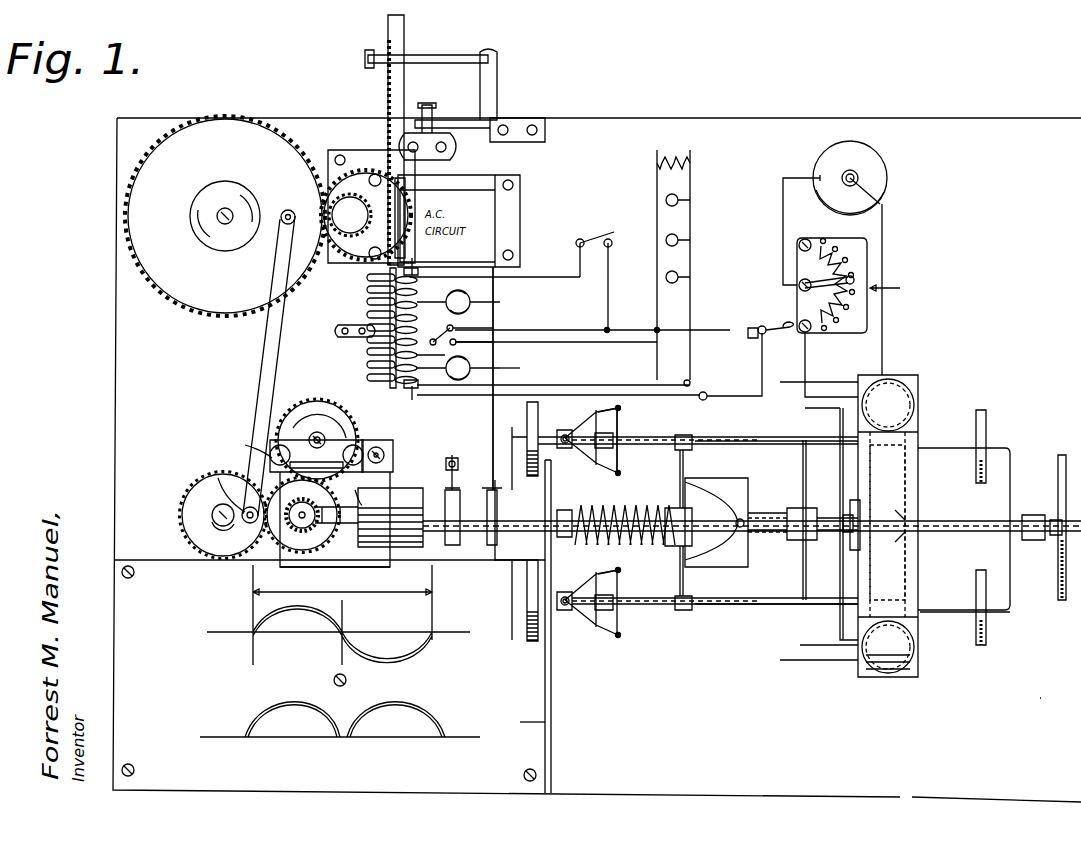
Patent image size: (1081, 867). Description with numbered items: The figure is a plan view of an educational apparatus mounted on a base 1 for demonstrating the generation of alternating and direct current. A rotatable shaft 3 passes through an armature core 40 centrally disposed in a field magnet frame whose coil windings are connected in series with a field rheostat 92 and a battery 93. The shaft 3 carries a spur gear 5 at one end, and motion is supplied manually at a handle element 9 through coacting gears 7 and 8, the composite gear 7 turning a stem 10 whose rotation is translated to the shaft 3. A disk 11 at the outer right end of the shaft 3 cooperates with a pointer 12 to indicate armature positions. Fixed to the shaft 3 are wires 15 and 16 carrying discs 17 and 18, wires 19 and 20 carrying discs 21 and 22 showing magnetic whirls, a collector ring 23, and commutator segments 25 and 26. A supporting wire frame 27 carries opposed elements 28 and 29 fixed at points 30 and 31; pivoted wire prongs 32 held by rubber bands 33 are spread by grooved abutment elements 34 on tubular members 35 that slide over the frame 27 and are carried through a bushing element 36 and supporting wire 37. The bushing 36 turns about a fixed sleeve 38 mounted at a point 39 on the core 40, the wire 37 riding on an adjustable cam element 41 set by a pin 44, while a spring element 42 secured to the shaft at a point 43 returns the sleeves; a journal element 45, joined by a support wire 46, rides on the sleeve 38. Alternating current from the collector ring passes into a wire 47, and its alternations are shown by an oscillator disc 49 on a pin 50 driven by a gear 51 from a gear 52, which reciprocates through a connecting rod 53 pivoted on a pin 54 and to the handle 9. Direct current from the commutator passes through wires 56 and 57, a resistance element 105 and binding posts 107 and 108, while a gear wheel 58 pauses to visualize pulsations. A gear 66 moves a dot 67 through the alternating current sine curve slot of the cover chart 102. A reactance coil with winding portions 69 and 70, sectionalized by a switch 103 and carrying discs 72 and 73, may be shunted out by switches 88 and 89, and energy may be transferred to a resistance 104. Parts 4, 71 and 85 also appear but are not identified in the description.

The base 1 is at (1040, 698).
The rotatable shaft 3 is at (940, 526).
The armature core 4 is at (905, 490).
The spur gear 5 is at (900, 668).
The composite gear 7 is at (312, 515).
The gear 8 is at (200, 530).
The handle element 9 is at (218, 478).
The stem 10 is at (867, 485).
The disk 11 is at (1062, 458).
The pointer 12 is at (1055, 540).
The wire 15 is at (1012, 490).
The wire 16 is at (1012, 590).
The disc 17 is at (988, 426).
The disc 18 is at (988, 633).
The wire 19 is at (527, 440).
The wire 20 is at (510, 556).
The disc 21 is at (538, 428).
The disc 22 is at (540, 575).
The collector ring 23 is at (465, 475).
The commutator segment 25 is at (400, 485).
The commutator segment 26 is at (450, 546).
The supporting wire frame 27 is at (775, 435).
The opposed element 28 is at (570, 432).
The opposed element 29 is at (567, 596).
The fixing point 30 is at (557, 430).
The fixing point 31 is at (567, 606).
The wire prong 32 is at (598, 597).
The rubber band 33 is at (620, 590).
The pressure abutment element 34 is at (617, 501).
The tubular member 35 is at (664, 608).
The bushing element 36 is at (672, 510).
The supporting wire 37 is at (684, 580).
The sleeve 38 is at (785, 515).
The mounting point 39 is at (850, 505).
The armature core 40 is at (522, 369).
The cam element 41 is at (720, 485).
The spring element 42 is at (608, 499).
The securing point 43 is at (565, 508).
The pin 44 is at (752, 520).
The journal element 45 is at (790, 545).
The support wire 46 is at (800, 568).
The wire 47 is at (490, 430).
The circuit oscillator element 49 is at (355, 185).
The pin 50 is at (317, 440).
The gear 51 is at (376, 455).
The gear 52 is at (225, 216).
The connecting rod 53 is at (262, 382).
The pin 54 is at (300, 205).
The wire 56 is at (345, 562).
The wire 57 is at (762, 594).
The gear wheel 58 is at (280, 438).
The gear 66 is at (312, 688).
The dot 67 is at (300, 594).
The coil winding portion 69 is at (372, 290).
The coil winding portion 70 is at (368, 383).
The resistance contacts 71 is at (680, 278).
The disc 72 is at (485, 301).
The disc 73 is at (470, 362).
The hand lever 85 is at (470, 60).
The switch 88 is at (758, 325).
The switch 89 is at (600, 233).
The field rheostat 92 is at (875, 439).
The battery 93 is at (870, 180).
The cover chart 102 is at (553, 720).
The double-throw single-pole switch 103 is at (460, 330).
The resistance 104 is at (685, 150).
The resistance element 105 is at (375, 418).
The binding post 107 is at (385, 448).
The binding post 108 is at (245, 445).